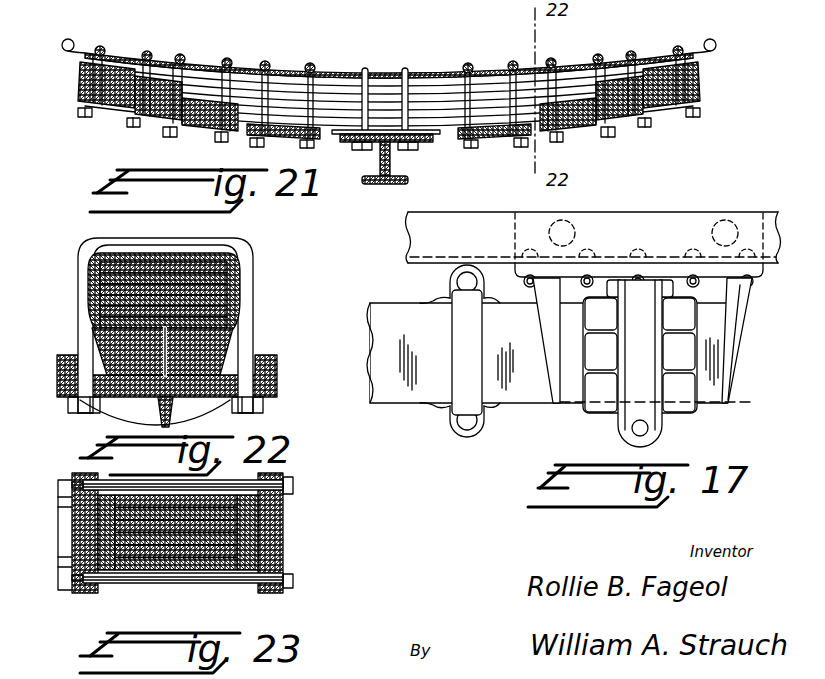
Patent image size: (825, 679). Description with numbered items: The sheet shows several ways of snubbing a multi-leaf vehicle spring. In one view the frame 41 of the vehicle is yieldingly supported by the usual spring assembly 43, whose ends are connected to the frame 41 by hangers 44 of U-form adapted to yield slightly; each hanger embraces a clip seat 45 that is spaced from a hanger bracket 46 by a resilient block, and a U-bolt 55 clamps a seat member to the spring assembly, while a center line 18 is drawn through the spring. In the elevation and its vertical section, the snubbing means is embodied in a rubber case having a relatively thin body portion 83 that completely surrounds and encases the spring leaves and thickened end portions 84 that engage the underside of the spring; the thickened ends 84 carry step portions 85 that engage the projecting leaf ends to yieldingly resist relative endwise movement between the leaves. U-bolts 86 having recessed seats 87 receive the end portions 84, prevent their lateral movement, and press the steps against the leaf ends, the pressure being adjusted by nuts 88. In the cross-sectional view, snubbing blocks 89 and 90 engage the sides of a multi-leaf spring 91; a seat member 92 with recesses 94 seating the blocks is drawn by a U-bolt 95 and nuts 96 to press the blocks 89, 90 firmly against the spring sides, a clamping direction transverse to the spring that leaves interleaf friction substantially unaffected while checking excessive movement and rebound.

In FIG. 21, the body portion 83 is at (291, 72).
In FIG. 21, the thickened end portions 84 is at (78, 97).
In FIG. 22, the thickened end portions 84 is at (102, 340).
In FIG. 21, the step portions 85 is at (264, 66).
In FIG. 22, the step portions 85 is at (227, 254).
In FIG. 21, the U-bolts 86 is at (150, 54).
In FIG. 22, the U-bolts 86 is at (88, 253).
In FIG. 21, the recessed seats 87 is at (214, 143).
In FIG. 22, the recessed seats 87 is at (58, 387).
In FIG. 21, the nuts 88 is at (322, 146).
In FIG. 22, the nuts 88 is at (160, 399).
In FIG. 17, the frame 41 is at (480, 243).
In FIG. 17, the hangers 44 is at (637, 317).
In FIG. 17, the spring assembly 43 is at (395, 343).
In FIG. 17, the spring center line 18 is at (353, 402).
In FIG. 17, the U-bolt 55 is at (473, 360).
In FIG. 17, the clip seat 45 is at (610, 387).
In FIG. 17, the hanger bracket 46 is at (717, 408).
In FIG. 23, the snubbing block 89 is at (287, 513).
In FIG. 23, the snubbing block 90 is at (68, 525).
In FIG. 23, the multi-leaf spring 91 is at (292, 480).
In FIG. 23, the seat member 92 is at (66, 475).
In FIG. 23, the recesses 94 is at (67, 570).
In FIG. 23, the U-bolt 95 is at (290, 537).
In FIG. 23, the nuts 96 is at (290, 585).